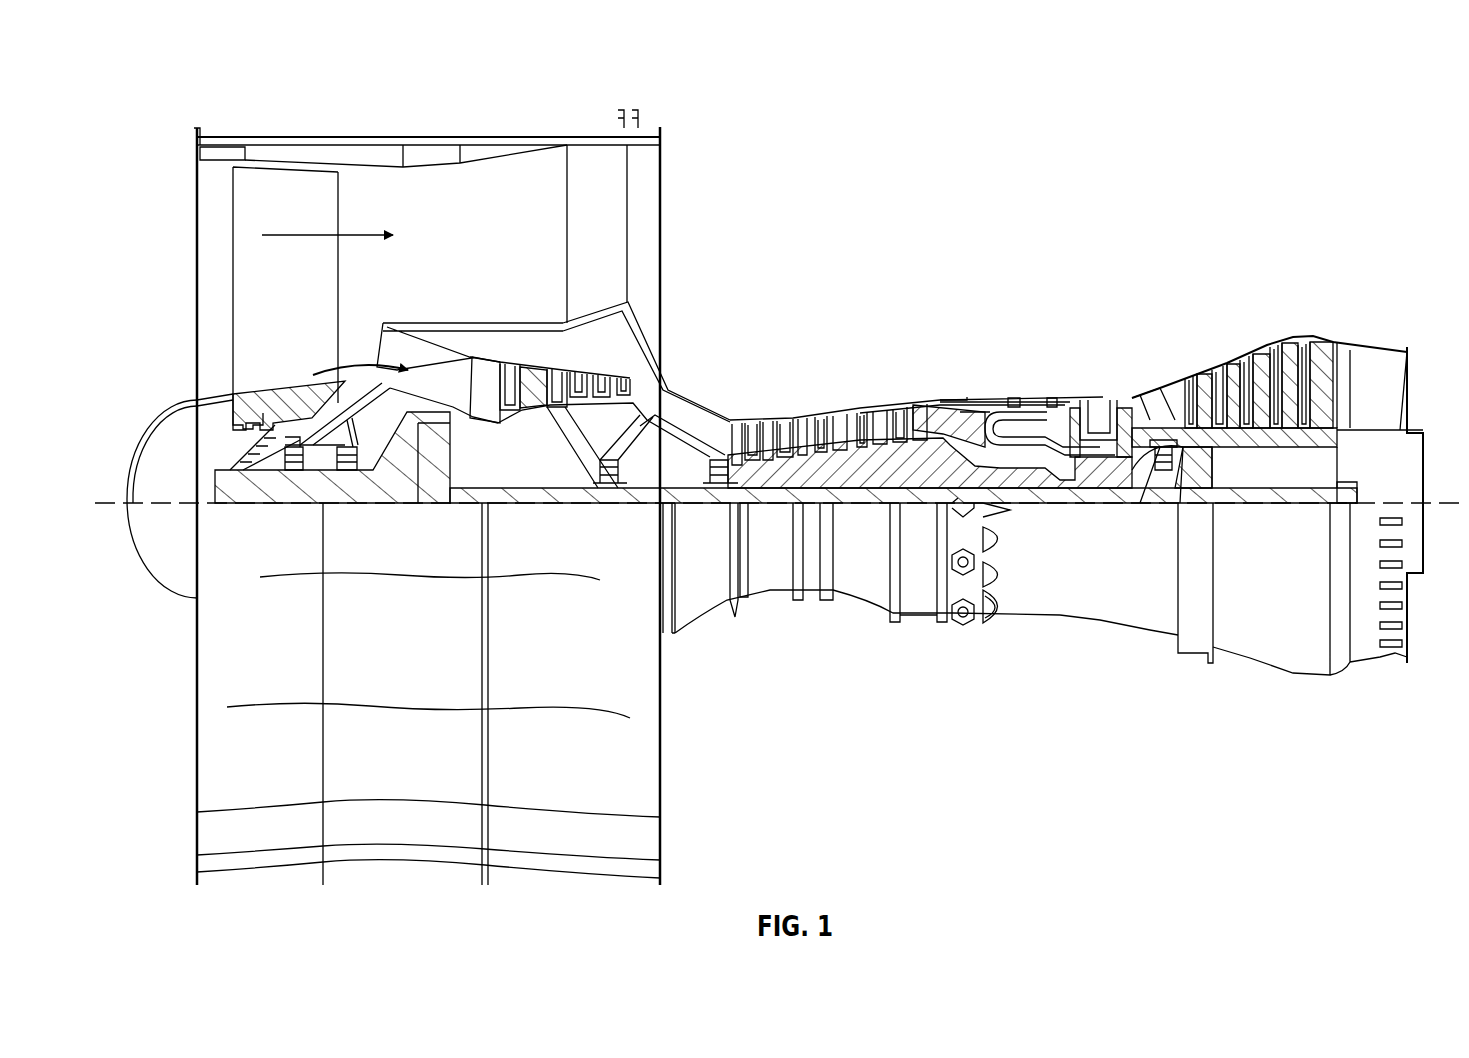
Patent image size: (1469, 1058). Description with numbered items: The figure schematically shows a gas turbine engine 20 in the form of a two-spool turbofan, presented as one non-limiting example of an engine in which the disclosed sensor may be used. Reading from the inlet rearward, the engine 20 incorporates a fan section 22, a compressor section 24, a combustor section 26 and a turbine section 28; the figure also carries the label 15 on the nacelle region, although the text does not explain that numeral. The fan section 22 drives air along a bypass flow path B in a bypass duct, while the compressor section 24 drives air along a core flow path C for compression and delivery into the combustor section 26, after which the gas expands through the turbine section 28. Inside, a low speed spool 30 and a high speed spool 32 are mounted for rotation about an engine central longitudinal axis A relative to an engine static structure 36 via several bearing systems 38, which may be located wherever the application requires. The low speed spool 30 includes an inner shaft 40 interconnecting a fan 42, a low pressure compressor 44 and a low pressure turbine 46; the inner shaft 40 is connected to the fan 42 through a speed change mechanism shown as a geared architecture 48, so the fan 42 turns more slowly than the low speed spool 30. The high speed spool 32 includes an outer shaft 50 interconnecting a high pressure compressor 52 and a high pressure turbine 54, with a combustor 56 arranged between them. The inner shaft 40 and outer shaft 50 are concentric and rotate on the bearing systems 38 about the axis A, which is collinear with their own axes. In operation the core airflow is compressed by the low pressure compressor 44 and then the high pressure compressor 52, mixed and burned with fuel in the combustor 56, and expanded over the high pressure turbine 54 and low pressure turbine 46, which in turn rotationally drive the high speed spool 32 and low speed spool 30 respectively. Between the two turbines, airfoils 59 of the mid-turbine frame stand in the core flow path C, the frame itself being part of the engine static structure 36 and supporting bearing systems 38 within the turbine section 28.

The fan section 15 is at (440, 136).
The gas turbine engine 20 is at (1300, 220).
The fan section 22 is at (390, 136).
The compressor section 24 is at (722, 368).
The combustor section 26 is at (996, 352).
The turbine section 28 is at (1185, 342).
The low speed spool 30 is at (880, 508).
The high speed spool 32 is at (918, 468).
The engine static structure 36 is at (922, 622).
The bearing systems 38 is at (605, 480).
The inner shaft 40 is at (684, 505).
The fan 42 is at (297, 283).
The low pressure compressor 44 is at (556, 388).
The low pressure turbine 46 is at (1262, 366).
The geared architecture 48 is at (440, 480).
The outer shaft 50 is at (1012, 505).
The high pressure compressor 52 is at (830, 470).
The high pressure turbine 54 is at (1098, 400).
The combustor 56 is at (1018, 430).
The airfoils 59 is at (1190, 440).
The engine central longitudinal axis A is at (1440, 503).
The bypass flow path B is at (332, 235).
The core flow path C is at (330, 370).